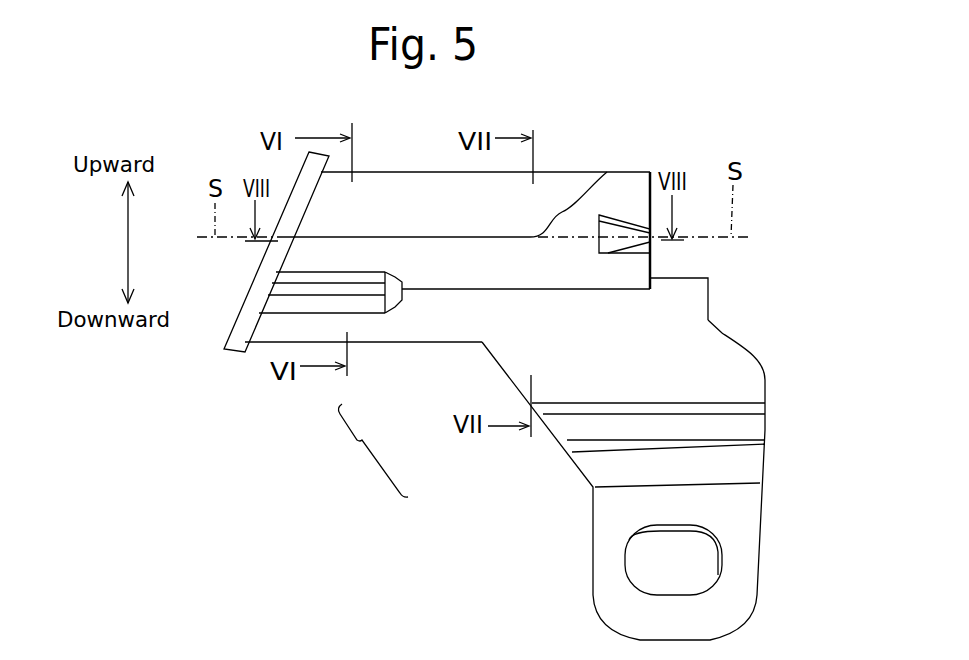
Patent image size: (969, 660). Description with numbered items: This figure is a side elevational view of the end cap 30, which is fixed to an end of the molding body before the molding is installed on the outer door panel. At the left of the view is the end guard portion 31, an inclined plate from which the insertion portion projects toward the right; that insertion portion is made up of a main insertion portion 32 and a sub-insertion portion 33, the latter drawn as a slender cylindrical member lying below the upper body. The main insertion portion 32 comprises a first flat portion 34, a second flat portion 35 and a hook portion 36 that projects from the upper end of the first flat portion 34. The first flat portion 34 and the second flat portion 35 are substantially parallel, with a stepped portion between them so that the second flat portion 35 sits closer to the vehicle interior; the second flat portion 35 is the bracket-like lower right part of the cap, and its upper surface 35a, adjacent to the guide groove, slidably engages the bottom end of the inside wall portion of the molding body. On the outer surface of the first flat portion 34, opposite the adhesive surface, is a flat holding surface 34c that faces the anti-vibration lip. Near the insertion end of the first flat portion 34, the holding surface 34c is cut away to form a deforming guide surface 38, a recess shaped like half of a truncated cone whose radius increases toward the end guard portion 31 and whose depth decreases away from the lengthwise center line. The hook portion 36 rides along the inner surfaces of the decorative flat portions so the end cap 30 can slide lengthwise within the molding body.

The end cap 30 is at (244, 127).
The end guard portion 31 is at (276, 250).
The main insertion portion 32 is at (365, 450).
The sub-insertion portion 33 is at (300, 308).
The first flat portion 34 is at (502, 270).
The flat holding surface 34c is at (563, 260).
The second flat portion 35 is at (513, 343).
The upper surface 35a is at (678, 273).
The hook portion 36 is at (472, 223).
The deforming guide surface 38 is at (615, 230).